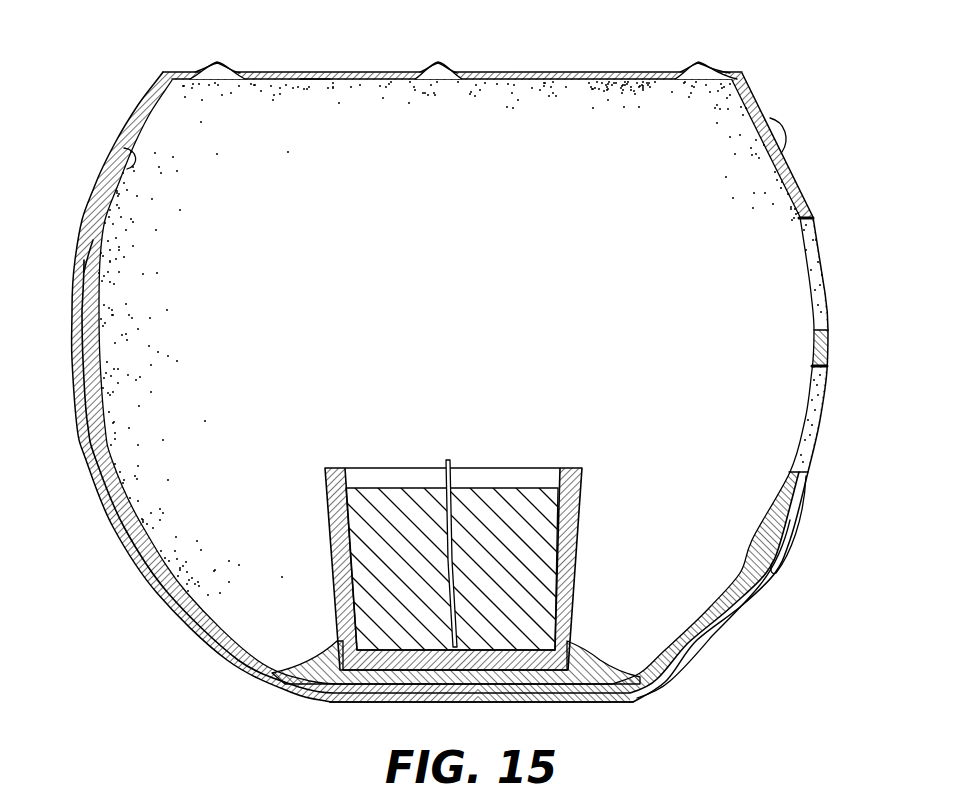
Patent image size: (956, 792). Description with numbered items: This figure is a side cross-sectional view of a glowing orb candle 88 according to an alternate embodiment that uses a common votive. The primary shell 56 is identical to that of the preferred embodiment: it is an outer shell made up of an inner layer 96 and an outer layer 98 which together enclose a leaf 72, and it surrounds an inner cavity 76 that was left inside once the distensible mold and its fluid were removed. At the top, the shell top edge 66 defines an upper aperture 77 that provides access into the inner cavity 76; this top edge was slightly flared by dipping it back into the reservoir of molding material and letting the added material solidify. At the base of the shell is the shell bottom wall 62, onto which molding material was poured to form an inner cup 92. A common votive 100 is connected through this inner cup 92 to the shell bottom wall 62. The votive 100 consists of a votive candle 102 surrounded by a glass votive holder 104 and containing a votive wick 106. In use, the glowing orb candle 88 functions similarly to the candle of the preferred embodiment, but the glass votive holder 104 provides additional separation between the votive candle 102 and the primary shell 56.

The primary shell 56 is at (753, 83).
The shell bottom wall 62 is at (503, 703).
The shell top edge 66 is at (485, 72).
The leaf 72 is at (80, 292).
The inner cavity 76 is at (610, 143).
The upper aperture 77 is at (317, 107).
The glowing orb candle 88 is at (192, 53).
The inner cup 92 is at (600, 657).
The inner layer 96 is at (125, 150).
The outer layer 98 is at (88, 206).
The votive 100 is at (448, 532).
The votive candle 102 is at (402, 510).
The glass votive holder 104 is at (333, 468).
The votive wick 106 is at (448, 460).